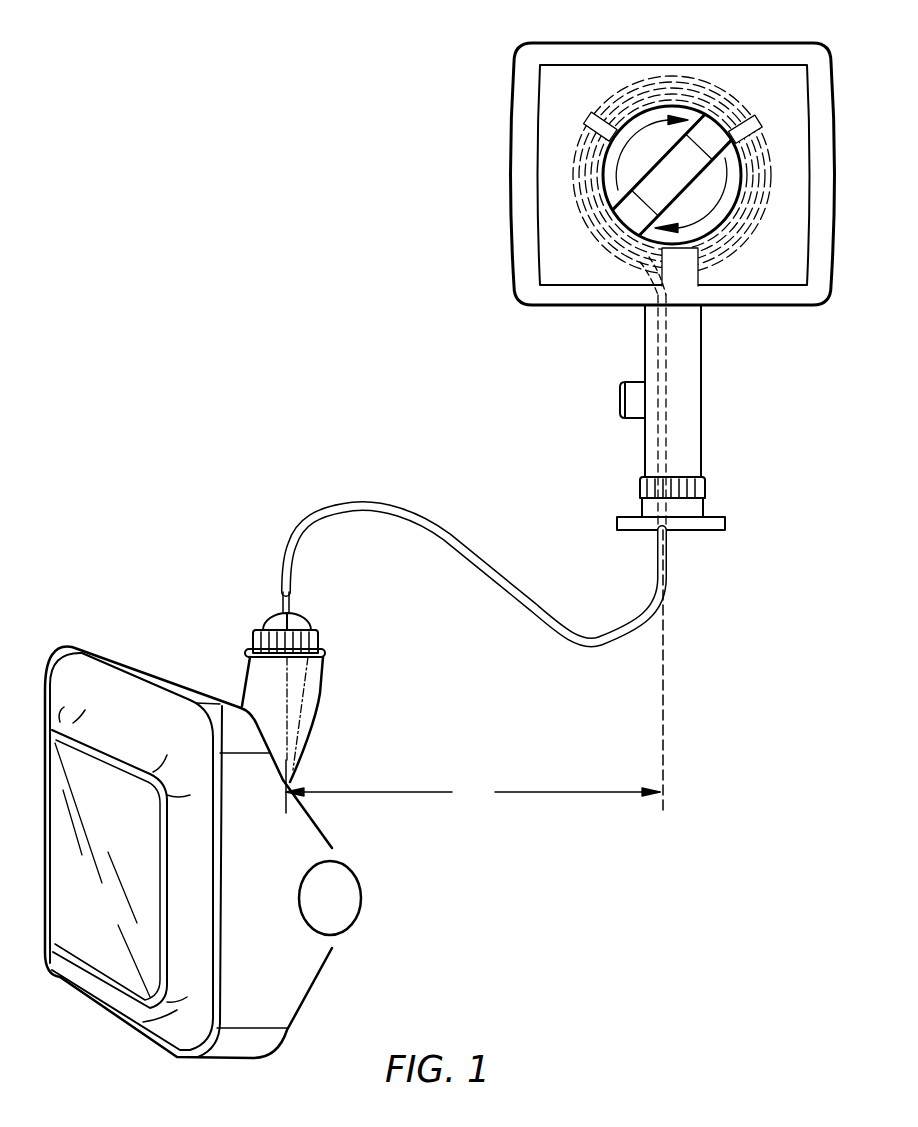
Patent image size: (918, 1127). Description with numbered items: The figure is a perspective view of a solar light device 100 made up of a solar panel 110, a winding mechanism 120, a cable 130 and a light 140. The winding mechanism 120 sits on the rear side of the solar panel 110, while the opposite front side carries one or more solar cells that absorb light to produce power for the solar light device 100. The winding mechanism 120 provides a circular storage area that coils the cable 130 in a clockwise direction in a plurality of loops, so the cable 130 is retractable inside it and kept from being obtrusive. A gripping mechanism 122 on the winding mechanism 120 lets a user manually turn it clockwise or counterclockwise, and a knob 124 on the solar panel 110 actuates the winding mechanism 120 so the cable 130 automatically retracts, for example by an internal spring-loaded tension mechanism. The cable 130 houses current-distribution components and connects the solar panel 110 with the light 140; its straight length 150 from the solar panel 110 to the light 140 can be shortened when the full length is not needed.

The solar light device 100 is at (236, 139).
The solar panel 110 is at (517, 69).
The winding mechanism 120 is at (693, 110).
The gripping mechanism 122 is at (657, 177).
The knob 124 is at (620, 399).
The cable 130 is at (395, 517).
The light 140 is at (97, 643).
The length 150 is at (474, 671).